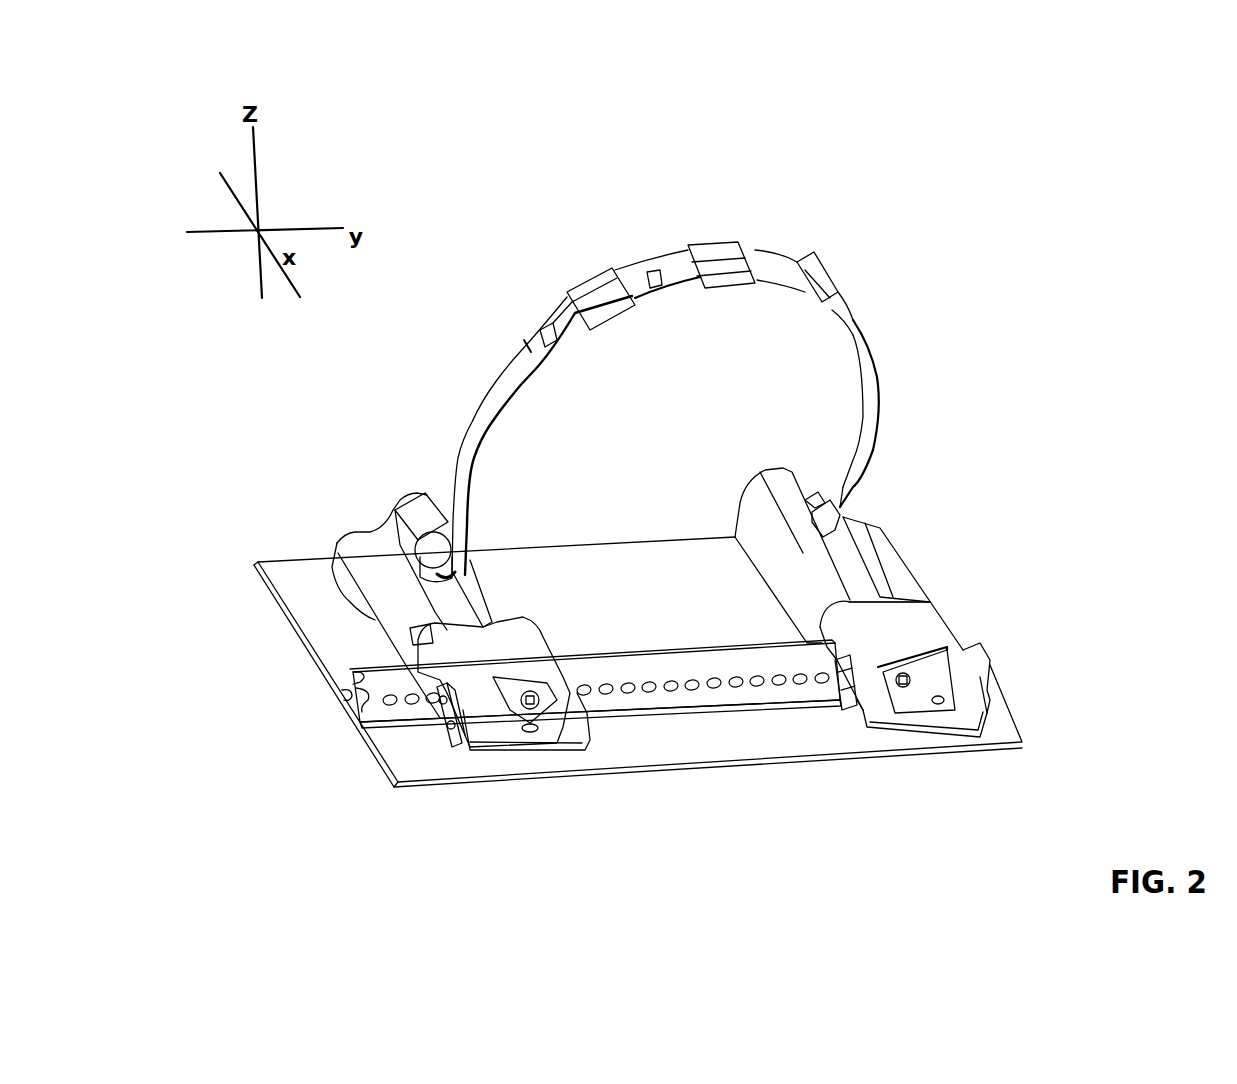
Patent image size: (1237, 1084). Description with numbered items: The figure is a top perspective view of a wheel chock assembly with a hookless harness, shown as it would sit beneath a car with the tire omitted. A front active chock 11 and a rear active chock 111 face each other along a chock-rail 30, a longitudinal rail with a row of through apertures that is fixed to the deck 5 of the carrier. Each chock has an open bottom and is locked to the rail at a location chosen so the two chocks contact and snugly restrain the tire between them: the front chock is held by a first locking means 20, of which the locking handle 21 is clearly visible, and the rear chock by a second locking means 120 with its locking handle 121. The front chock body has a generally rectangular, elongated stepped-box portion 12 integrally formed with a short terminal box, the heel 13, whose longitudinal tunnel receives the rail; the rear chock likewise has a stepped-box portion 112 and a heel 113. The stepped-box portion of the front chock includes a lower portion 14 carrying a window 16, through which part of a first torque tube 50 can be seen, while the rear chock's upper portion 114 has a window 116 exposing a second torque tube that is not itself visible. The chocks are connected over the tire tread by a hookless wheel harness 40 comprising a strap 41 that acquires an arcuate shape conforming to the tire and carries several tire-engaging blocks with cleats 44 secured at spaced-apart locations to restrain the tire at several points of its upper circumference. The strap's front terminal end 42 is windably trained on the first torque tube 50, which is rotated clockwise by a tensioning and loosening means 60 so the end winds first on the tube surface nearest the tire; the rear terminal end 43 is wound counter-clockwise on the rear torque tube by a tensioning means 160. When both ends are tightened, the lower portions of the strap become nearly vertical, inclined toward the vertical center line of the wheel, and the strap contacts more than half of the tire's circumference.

The base plate 5 is at (355, 567).
The first active chock 11 is at (350, 524).
The stepped-box portion 12 is at (368, 593).
The heel 13 is at (397, 783).
The lower portion 14 is at (417, 503).
The window 16 is at (443, 540).
The first locking means 20 is at (437, 687).
The locking handle 21 is at (527, 753).
The chock-rail 30 is at (703, 697).
The hookless wheel harness 40 is at (527, 353).
The strap 41 is at (873, 353).
The front terminal end 42 is at (362, 598).
The rear terminal end 43 is at (823, 537).
The tire-engaging blocks with cleats 44 is at (593, 273).
The first torque tube 50 is at (420, 549).
The tensioning and loosening means 60 is at (497, 661).
The second active chock 111 is at (955, 588).
The stepped-box portion 112 is at (820, 580).
The heel 113 is at (912, 632).
The upper portion 114 is at (765, 505).
The window 116 is at (813, 493).
The second locking means 120 is at (845, 640).
The locking handle 121 is at (925, 730).
The tensioning means 160 is at (932, 670).